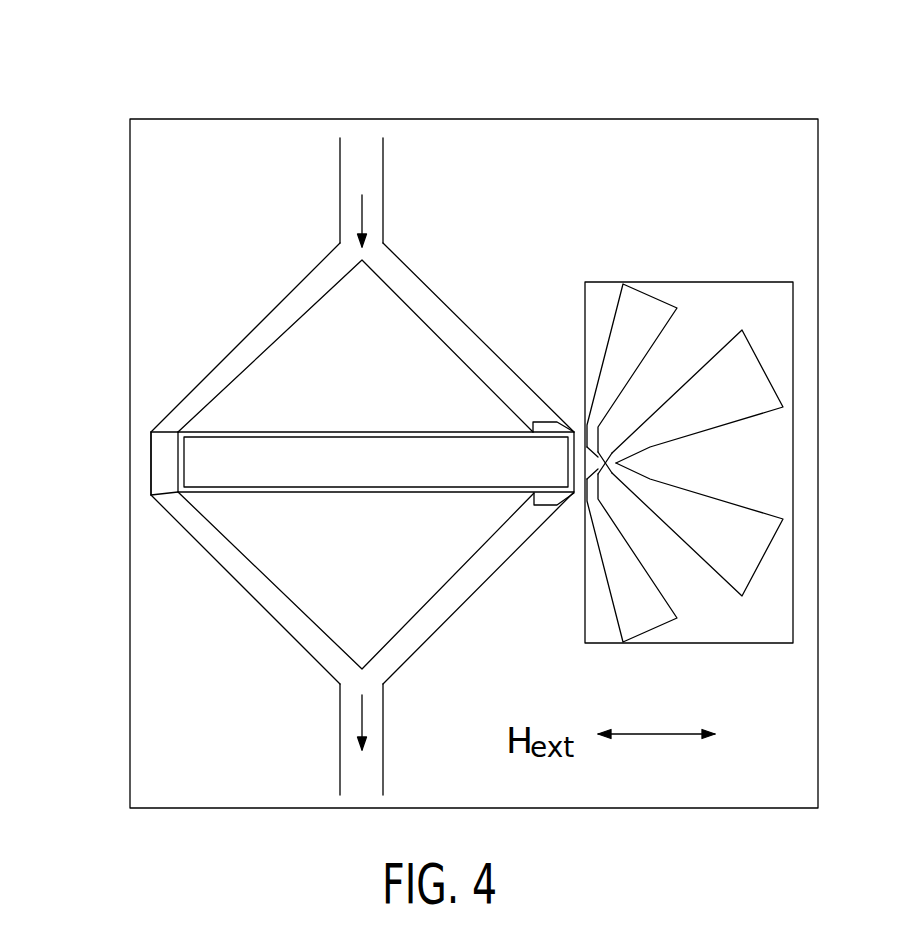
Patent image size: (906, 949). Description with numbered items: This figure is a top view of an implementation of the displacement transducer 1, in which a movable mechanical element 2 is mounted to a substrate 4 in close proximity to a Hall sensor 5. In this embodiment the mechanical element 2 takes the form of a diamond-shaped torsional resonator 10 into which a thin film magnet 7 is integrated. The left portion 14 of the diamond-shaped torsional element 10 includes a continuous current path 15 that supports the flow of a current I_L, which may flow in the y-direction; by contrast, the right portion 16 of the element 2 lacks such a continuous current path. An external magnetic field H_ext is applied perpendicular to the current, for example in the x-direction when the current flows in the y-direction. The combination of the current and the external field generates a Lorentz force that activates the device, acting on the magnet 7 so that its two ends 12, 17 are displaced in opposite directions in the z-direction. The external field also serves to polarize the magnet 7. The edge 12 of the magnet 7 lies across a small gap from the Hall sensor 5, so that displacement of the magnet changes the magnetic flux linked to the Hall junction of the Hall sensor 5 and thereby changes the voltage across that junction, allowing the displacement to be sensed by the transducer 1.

The displacement transducer 1 is at (474, 409).
The movable mechanical element 2 is at (313, 467).
The substrate 4 is at (205, 720).
The Hall sensor 5 is at (689, 400).
The thin film magnet 7 is at (376, 433).
The diamond-shaped torsional resonator 10 is at (362, 463).
The edge of the magnet 12 is at (539, 548).
The left portion of the diamond-shaped torsional element 14 is at (100, 444).
The continuous current path 15 is at (193, 383).
The right portion of the element 16 is at (530, 347).
The end of the magnet 17 is at (184, 555).